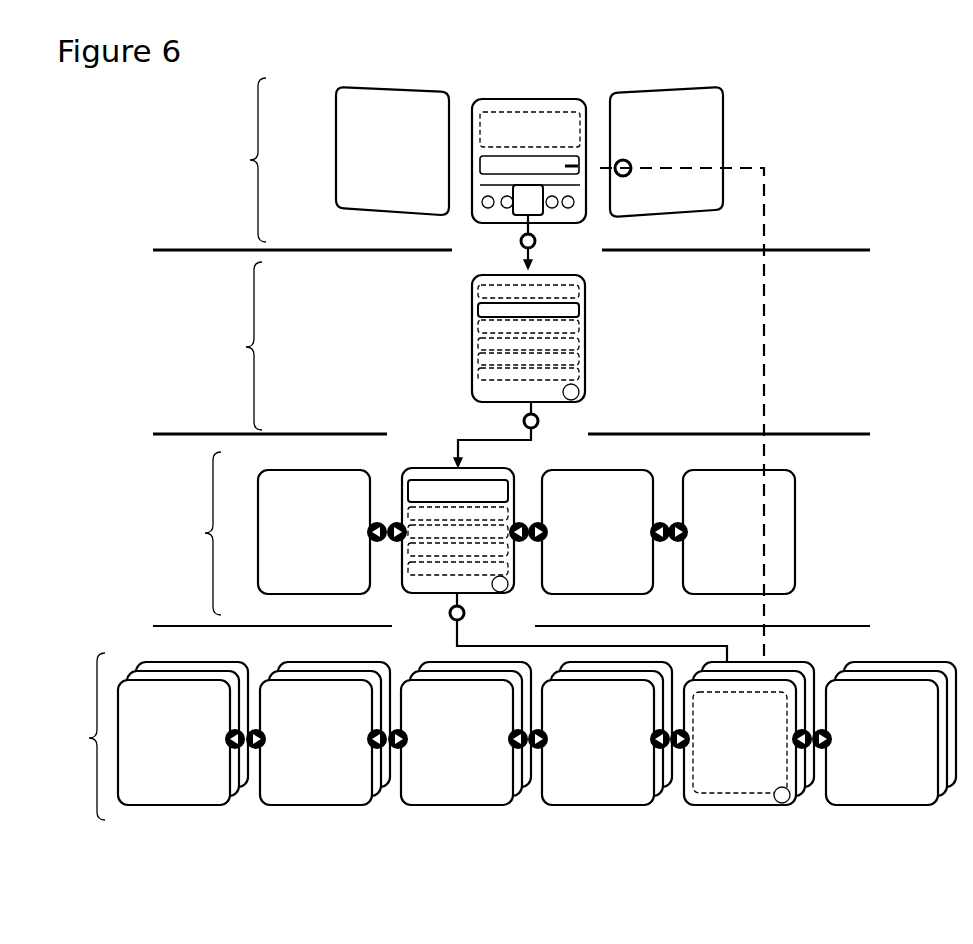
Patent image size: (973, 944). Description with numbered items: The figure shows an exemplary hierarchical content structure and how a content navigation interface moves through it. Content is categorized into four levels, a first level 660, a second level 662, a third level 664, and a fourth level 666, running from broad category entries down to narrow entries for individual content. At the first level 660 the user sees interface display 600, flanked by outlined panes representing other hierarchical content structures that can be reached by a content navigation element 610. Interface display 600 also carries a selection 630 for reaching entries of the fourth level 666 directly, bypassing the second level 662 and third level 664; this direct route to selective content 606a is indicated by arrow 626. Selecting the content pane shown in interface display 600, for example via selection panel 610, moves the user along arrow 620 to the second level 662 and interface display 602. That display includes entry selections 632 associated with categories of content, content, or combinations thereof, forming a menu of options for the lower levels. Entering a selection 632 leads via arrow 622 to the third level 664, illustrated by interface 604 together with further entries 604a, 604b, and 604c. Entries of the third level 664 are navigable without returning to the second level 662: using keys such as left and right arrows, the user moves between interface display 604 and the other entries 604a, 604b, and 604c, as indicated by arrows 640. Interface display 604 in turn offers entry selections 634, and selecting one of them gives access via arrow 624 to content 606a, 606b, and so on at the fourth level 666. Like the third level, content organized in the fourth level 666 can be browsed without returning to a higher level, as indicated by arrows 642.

The interface display 600 is at (516, 140).
The selection 630 is at (575, 162).
The arrow 626 is at (625, 162).
The content navigation element 610 is at (483, 209).
The arrow 620 is at (520, 246).
The interface display 602 is at (536, 338).
The arrow 622 is at (522, 418).
The entry selections 632 is at (570, 342).
The interface 604a is at (297, 472).
The interface display 604 is at (464, 515).
The entry selections 634 is at (502, 520).
The interface 604b is at (623, 471).
The arrows 640 is at (668, 505).
The interface 604c is at (720, 468).
The arrow 624 is at (449, 613).
The arrows 642 is at (667, 769).
The content 606a is at (732, 805).
The content 606b is at (873, 805).
The first level 660 is at (235, 160).
The second level 662 is at (230, 346).
The third level 664 is at (189, 533).
The fourth level 666 is at (75, 736).